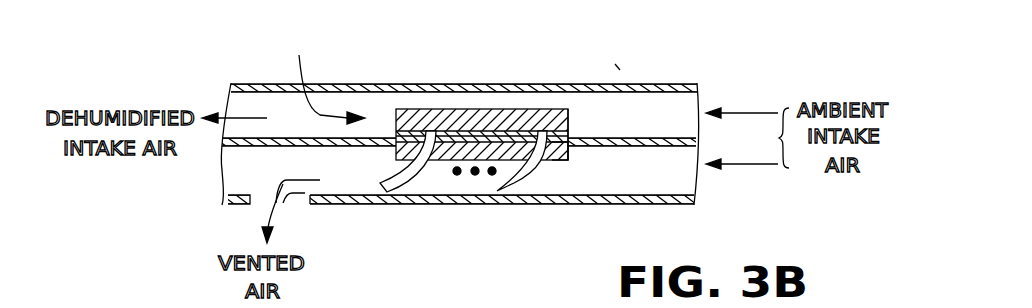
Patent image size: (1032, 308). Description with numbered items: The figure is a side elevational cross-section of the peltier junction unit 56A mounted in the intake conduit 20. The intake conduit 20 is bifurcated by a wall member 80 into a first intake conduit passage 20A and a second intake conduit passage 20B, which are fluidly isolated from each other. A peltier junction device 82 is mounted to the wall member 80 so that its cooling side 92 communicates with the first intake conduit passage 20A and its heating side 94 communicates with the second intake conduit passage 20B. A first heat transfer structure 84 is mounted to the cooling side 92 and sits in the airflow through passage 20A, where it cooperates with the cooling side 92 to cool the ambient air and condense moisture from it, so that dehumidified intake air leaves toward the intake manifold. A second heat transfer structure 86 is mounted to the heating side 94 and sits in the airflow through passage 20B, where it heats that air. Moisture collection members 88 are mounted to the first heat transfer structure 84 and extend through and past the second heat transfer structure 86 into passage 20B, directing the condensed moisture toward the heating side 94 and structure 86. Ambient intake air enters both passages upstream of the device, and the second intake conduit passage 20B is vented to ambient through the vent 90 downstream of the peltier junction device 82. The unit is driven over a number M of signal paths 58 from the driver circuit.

The intake conduit 20 is at (540, 84).
The first intake conduit passage 20A is at (686, 128).
The second intake conduit passage 20B is at (686, 185).
The peltier junction unit 56A is at (324, 78).
The signal paths 58 is at (615, 67).
The wall member 80 is at (257, 148).
The peltier junction device 82 is at (394, 134).
The first heat transfer structure 84 is at (490, 131).
The second heat transfer structure 86 is at (552, 161).
The moisture collection members 88 is at (385, 193).
The vent 90 is at (292, 198).
The cooling side 92 is at (458, 131).
The heating side 94 is at (440, 161).
The number of signal paths M is at (570, 128).